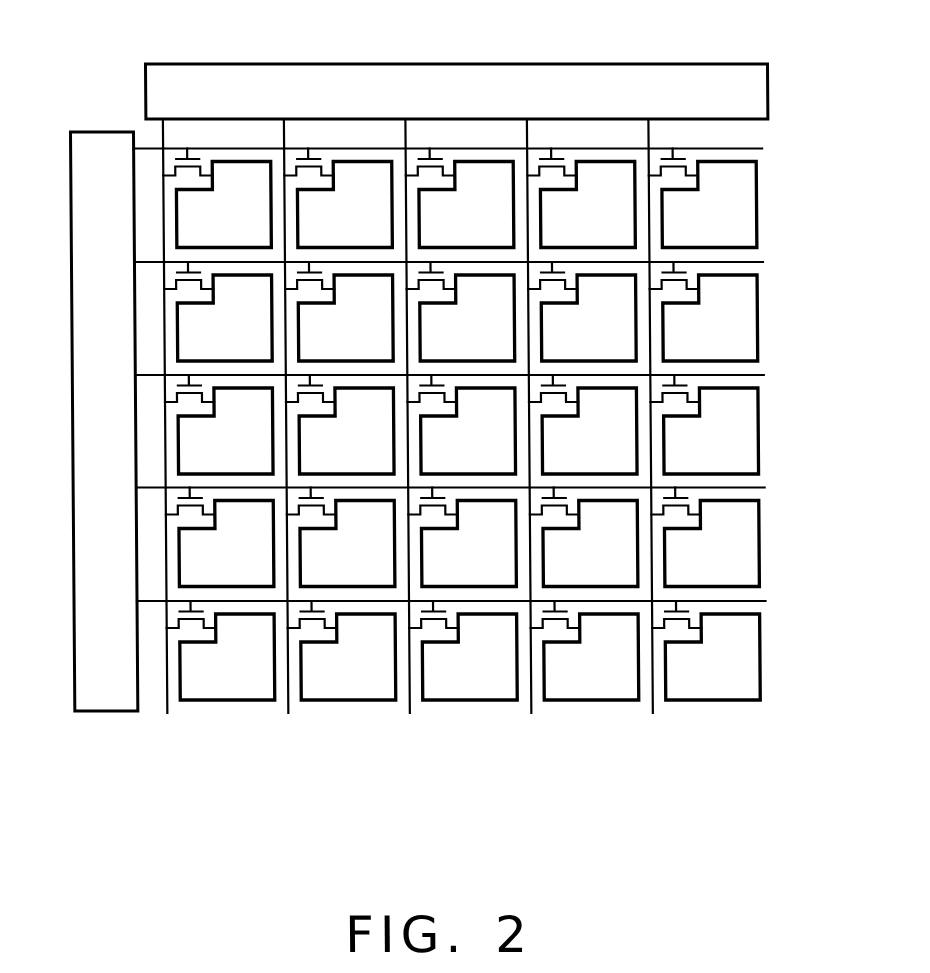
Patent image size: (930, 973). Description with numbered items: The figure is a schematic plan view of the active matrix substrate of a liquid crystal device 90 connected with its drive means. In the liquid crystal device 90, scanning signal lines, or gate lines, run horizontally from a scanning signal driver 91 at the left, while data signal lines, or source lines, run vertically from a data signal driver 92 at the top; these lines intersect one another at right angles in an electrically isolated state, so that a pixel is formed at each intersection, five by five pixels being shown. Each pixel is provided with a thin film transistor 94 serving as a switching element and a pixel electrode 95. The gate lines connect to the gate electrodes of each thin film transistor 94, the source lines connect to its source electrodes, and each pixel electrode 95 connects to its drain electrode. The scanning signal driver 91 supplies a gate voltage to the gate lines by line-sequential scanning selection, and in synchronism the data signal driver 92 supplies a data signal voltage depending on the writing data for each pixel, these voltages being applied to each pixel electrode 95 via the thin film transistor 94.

The liquid crystal device 90 is at (758, 752).
The scanning signal driver 91 is at (110, 692).
The data signal driver 92 is at (413, 88).
The thin film transistor 94 is at (675, 180).
The pixel electrode 95 is at (727, 179).